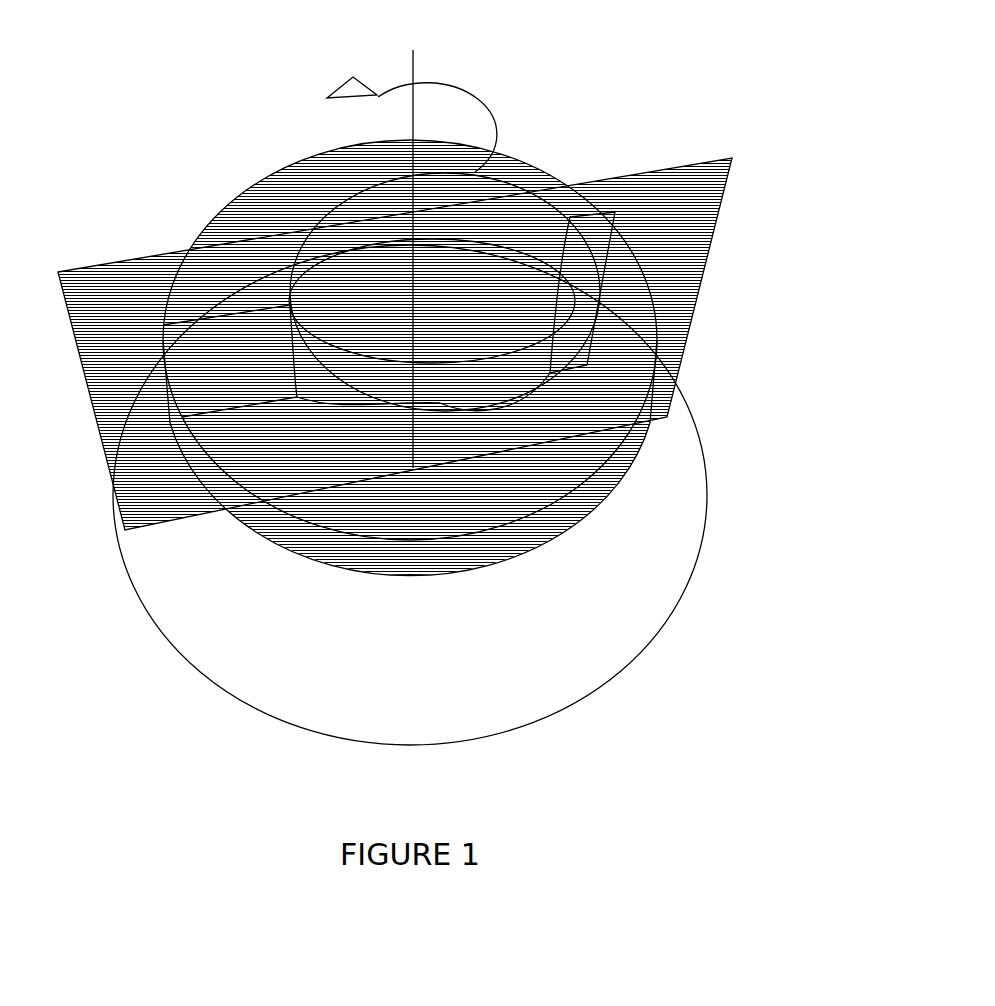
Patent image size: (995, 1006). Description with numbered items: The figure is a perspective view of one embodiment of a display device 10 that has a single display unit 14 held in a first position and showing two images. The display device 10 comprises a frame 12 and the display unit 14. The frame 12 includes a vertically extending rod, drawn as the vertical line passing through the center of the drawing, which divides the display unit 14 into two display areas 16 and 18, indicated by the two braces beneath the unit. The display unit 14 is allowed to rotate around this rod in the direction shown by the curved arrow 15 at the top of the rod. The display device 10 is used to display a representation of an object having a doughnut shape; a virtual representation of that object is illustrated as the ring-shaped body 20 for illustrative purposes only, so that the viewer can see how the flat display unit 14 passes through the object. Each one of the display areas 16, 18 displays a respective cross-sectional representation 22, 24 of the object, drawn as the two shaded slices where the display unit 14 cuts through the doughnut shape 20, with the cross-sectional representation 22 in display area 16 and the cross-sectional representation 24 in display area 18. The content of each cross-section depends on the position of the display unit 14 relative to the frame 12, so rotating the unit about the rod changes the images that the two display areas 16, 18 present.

The display device 10 is at (698, 82).
The frame 12 is at (413, 68).
The display unit 14 is at (692, 200).
The arrow 15 is at (487, 95).
The display area 16 is at (660, 417).
The display area 18 is at (410, 468).
The virtual representation of the object 20 is at (300, 183).
The cross-sectional representation 22 is at (603, 277).
The cross-sectional representation 24 is at (230, 312).